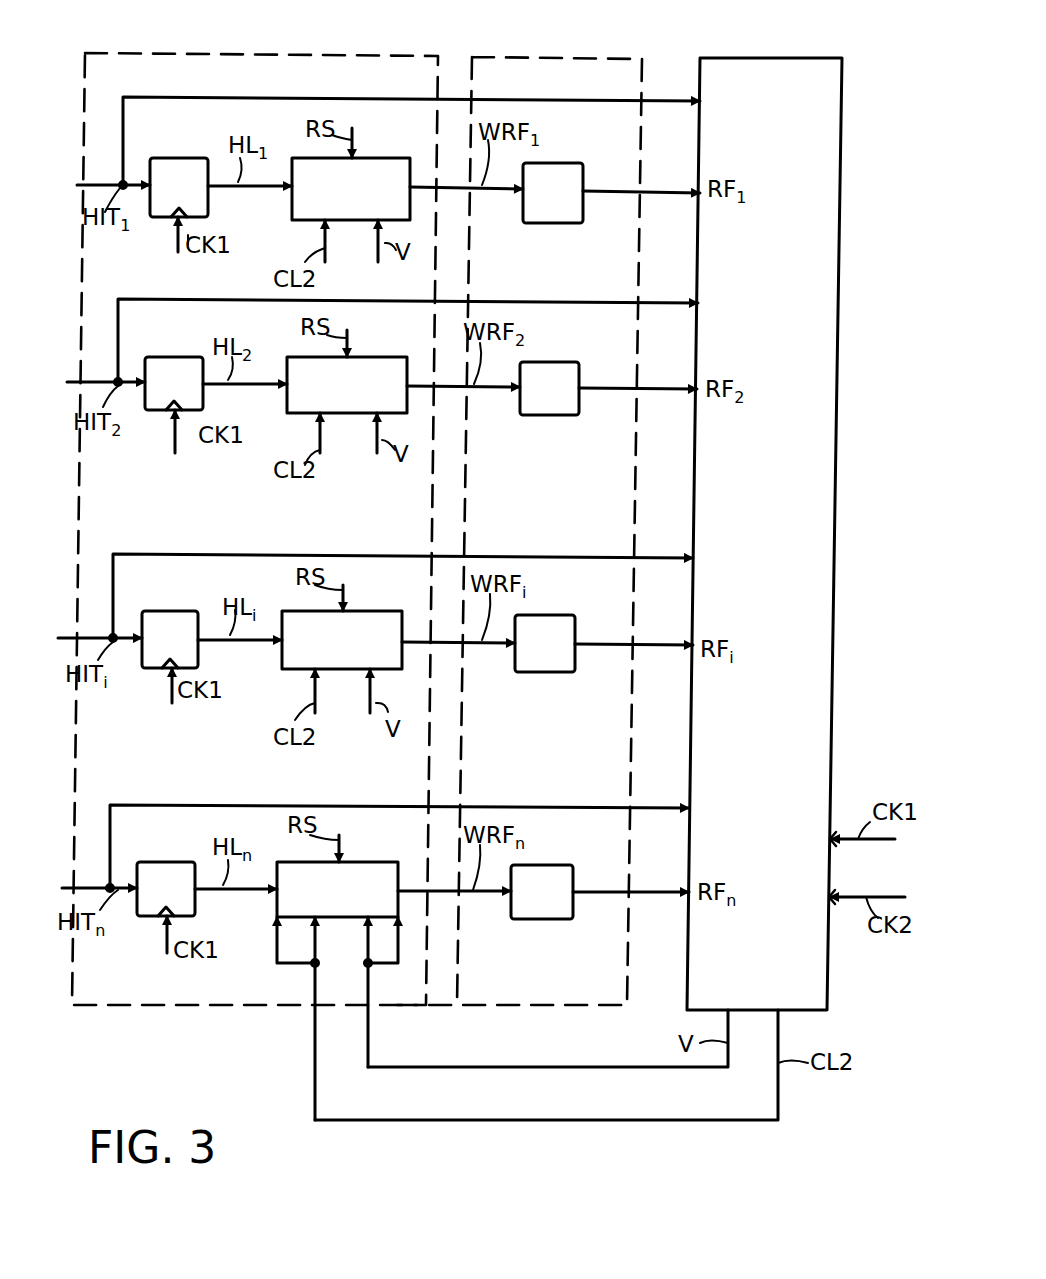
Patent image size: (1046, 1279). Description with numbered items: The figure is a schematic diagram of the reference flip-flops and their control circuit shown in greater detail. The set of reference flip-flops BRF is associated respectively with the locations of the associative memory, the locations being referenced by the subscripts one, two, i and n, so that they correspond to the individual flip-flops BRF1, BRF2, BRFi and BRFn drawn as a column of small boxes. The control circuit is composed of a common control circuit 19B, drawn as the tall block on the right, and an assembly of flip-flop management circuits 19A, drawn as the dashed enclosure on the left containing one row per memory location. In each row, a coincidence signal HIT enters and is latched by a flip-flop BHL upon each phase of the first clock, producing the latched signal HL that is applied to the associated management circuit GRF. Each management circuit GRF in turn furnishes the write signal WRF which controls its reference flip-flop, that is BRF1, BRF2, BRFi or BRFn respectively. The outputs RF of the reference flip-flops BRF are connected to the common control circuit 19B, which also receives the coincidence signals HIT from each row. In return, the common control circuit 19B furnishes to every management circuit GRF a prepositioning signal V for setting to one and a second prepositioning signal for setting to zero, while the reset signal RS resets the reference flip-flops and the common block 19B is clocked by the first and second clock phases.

The assembly of flip-flop management circuits 19A is at (278, 33).
The common control circuit 19B is at (834, 538).
The latch flip-flop BHL is at (173, 158).
The management circuit GRF is at (400, 158).
The reference flip-flops BRF is at (590, 58).
The reference flip-flop BRF1 is at (583, 166).
The reference flip-flop BRF2 is at (578, 363).
The reference flip-flop BRFi is at (565, 616).
The reference flip-flop BRFn is at (582, 847).